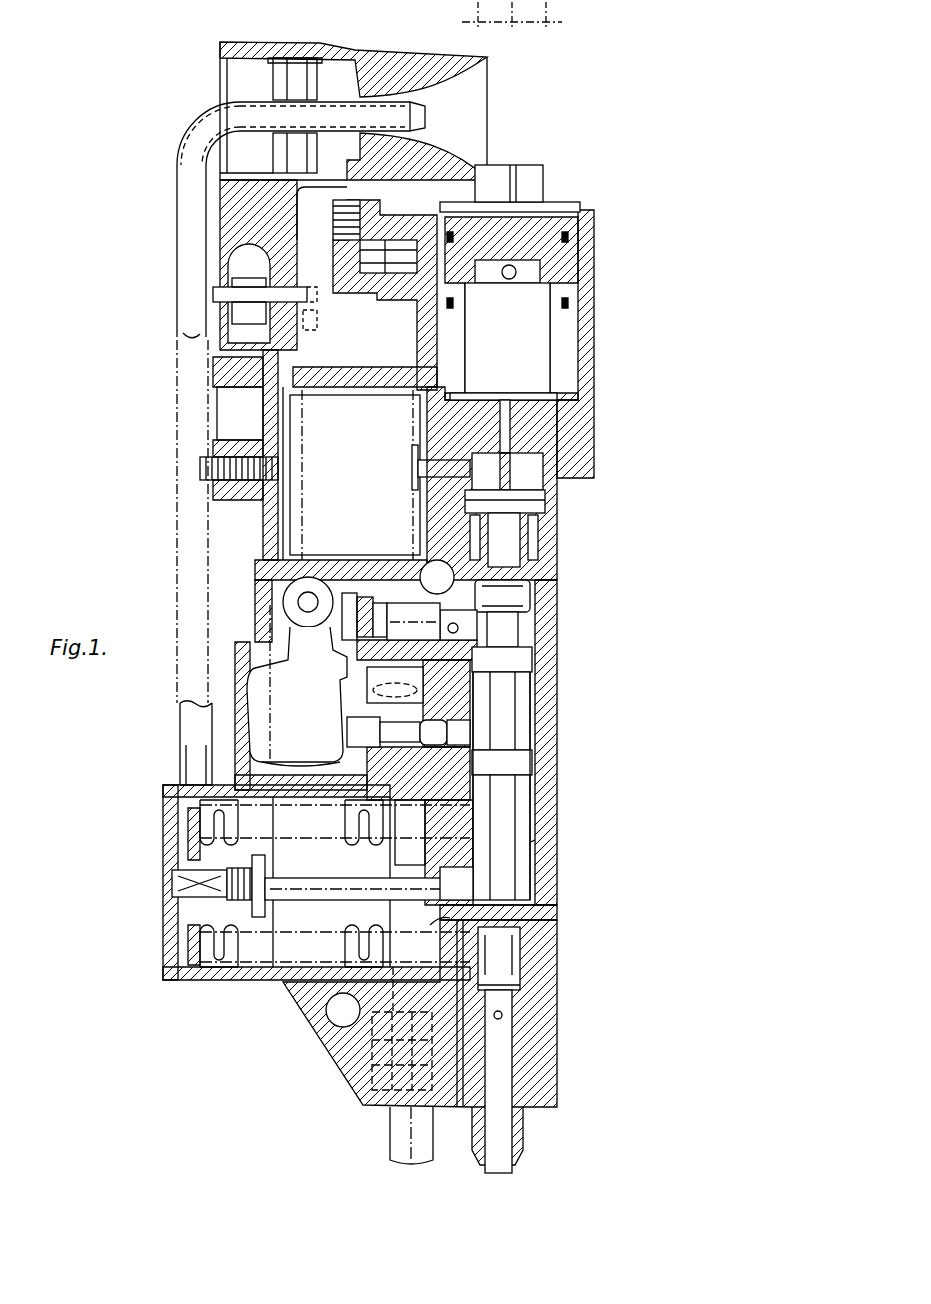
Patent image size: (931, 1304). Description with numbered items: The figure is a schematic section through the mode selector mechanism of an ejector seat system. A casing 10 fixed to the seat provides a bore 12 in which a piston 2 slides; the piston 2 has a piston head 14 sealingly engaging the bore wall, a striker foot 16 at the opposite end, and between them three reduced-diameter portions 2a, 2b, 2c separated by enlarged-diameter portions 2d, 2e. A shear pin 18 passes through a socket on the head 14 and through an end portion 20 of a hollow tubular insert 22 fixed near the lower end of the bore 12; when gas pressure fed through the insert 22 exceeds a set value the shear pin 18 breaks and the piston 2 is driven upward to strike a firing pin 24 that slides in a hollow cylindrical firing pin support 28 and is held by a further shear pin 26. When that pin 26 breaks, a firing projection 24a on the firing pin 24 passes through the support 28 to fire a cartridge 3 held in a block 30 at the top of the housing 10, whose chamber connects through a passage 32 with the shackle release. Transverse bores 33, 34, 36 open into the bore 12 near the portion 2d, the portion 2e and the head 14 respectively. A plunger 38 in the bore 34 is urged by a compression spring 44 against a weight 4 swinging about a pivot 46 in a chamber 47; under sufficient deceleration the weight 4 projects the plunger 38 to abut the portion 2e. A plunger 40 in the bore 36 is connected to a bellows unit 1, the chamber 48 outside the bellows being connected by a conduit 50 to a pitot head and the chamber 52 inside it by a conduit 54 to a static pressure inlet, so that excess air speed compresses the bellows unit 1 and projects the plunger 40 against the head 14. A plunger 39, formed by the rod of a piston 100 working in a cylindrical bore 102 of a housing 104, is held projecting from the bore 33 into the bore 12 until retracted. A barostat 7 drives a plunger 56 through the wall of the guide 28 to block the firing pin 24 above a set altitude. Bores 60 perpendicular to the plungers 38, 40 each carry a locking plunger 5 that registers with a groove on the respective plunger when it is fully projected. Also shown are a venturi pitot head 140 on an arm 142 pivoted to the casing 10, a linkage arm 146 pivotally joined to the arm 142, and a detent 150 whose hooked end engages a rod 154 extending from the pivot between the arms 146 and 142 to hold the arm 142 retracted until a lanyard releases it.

The bellows unit 1 is at (207, 955).
The piston 2 is at (520, 797).
The reduced-diameter portion 2a is at (505, 630).
The reduced-diameter portion 2b is at (515, 715).
The reduced-diameter portion 2c is at (500, 823).
The enlarged-diameter portion 2d is at (520, 658).
The enlarged-diameter portion 2e is at (515, 762).
The cartridge 3 is at (540, 345).
The weight 4 is at (308, 720).
The locking plunger 5 is at (448, 870).
The barostat 7 is at (305, 440).
The casing 10 is at (545, 877).
The bore 12 is at (530, 852).
The piston head 14 is at (520, 905).
The striker foot 16 is at (520, 595).
The shear pin 18 is at (525, 992).
The end portion 20 is at (518, 1015).
The hollow tubular insert 22 is at (525, 1072).
The firing pin 24 is at (525, 545).
The firing projection 24a is at (505, 435).
The shear pin 26 is at (545, 495).
The firing pin support 28 is at (545, 405).
The block 30 is at (560, 315).
The passage 32 is at (385, 250).
The transverse bore 33 is at (455, 648).
The transverse bore 34 is at (437, 747).
The transverse bore 36 is at (447, 905).
The plunger 38 is at (412, 747).
The plunger 39 is at (477, 625).
The plunger 40 is at (345, 890).
The compression spring 44 is at (385, 747).
The pivot 46 is at (305, 602).
The chamber 47 is at (278, 762).
The chamber 48 is at (180, 935).
The conduit 50 is at (190, 720).
The chamber 52 is at (268, 950).
The conduit 54 is at (385, 1120).
The plunger 56 is at (430, 475).
The bore 60 is at (420, 868).
The piston 100 is at (385, 605).
The cylindrical bore 102 is at (368, 605).
The housing 104 is at (415, 605).
The venturi pitot head 140 is at (415, 58).
The arm 142 is at (230, 209).
The arm 146 is at (243, 329).
The detent 150 is at (318, 320).
The rod 154 is at (312, 287).